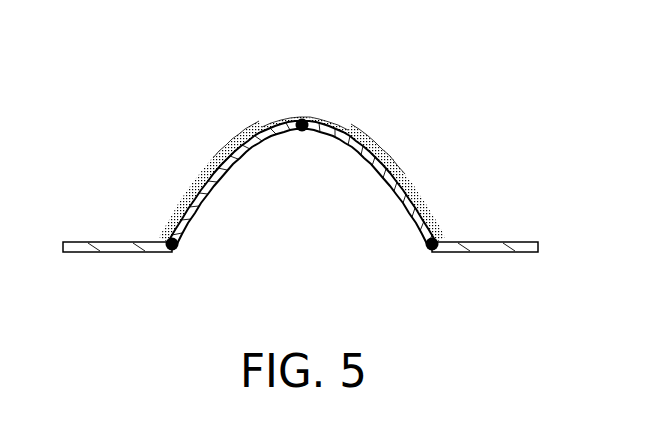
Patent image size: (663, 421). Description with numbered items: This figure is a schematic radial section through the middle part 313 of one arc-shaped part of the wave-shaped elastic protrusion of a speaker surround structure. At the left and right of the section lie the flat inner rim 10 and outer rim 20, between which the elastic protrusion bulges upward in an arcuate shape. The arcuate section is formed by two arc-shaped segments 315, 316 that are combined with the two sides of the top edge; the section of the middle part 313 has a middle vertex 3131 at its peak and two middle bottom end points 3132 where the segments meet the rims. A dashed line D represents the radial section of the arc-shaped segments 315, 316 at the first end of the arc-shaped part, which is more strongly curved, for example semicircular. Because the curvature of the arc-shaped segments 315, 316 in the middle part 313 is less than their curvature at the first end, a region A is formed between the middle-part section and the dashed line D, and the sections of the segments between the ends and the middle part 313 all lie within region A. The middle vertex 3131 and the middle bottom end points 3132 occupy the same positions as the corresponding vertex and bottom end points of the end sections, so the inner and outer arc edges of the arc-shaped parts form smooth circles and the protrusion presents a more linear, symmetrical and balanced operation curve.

The inner rim 10 is at (108, 253).
The outer rim 20 is at (493, 253).
The middle part 313 is at (436, 146).
The arc-shaped segment 315 is at (233, 163).
The arc-shaped segment 316 is at (376, 150).
The middle vertex 3131 is at (302, 119).
The middle bottom end points 3132 is at (179, 253).
The region A is at (219, 182).
The dashed line D is at (195, 177).